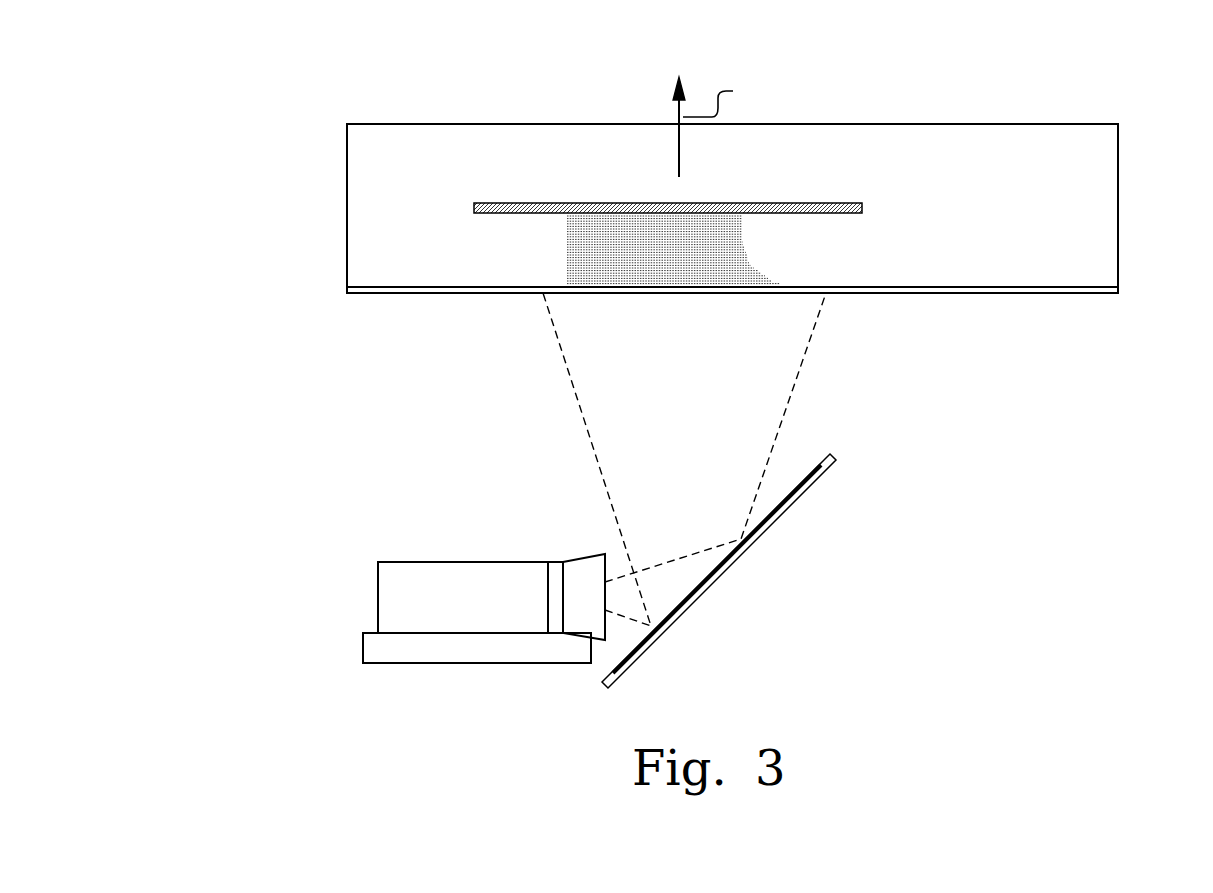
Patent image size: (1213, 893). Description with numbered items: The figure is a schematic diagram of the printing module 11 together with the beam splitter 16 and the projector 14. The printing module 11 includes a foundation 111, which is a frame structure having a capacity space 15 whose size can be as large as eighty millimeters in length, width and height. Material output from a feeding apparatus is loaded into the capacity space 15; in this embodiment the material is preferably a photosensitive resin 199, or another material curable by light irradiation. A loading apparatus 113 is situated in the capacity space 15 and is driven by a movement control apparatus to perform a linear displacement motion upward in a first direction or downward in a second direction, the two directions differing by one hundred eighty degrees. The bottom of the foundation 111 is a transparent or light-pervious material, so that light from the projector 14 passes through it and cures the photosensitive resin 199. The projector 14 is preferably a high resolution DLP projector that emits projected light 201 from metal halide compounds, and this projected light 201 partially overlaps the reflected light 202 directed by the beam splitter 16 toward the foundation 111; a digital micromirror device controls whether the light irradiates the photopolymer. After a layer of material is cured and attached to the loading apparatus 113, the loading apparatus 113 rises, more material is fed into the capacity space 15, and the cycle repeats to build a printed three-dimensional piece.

The printing module 11 is at (405, 89).
The capacity space 15 is at (1011, 147).
The foundation 111 is at (1118, 215).
The loading apparatus 113 is at (508, 202).
The photosensitive resin 199 is at (585, 252).
The projector 14 is at (400, 598).
The beam splitter 16 is at (787, 500).
The projected light 201 is at (623, 592).
The reflected light 202 is at (765, 388).